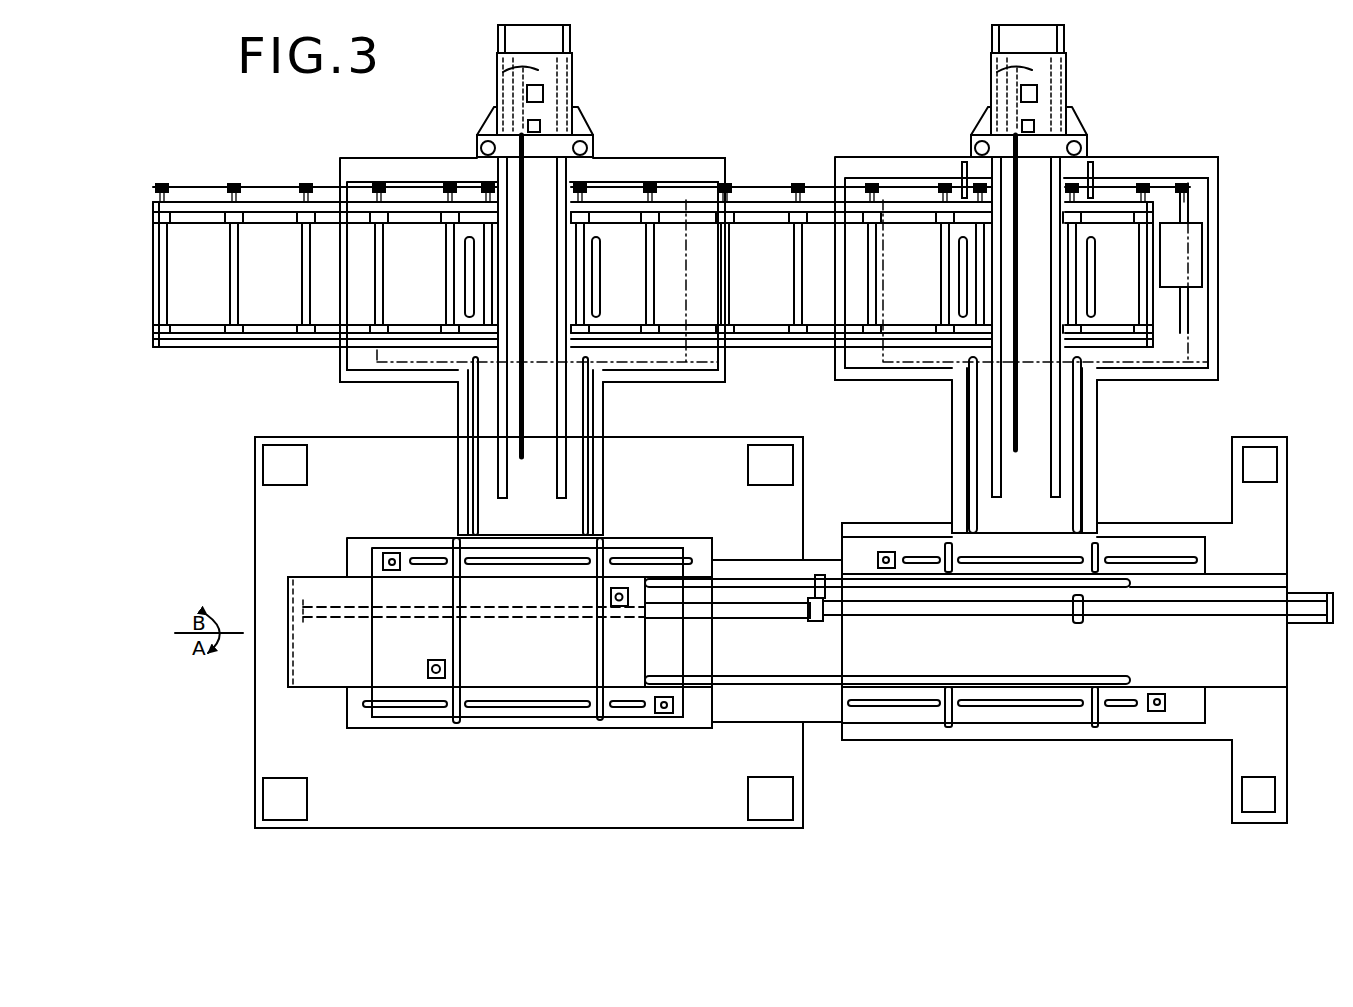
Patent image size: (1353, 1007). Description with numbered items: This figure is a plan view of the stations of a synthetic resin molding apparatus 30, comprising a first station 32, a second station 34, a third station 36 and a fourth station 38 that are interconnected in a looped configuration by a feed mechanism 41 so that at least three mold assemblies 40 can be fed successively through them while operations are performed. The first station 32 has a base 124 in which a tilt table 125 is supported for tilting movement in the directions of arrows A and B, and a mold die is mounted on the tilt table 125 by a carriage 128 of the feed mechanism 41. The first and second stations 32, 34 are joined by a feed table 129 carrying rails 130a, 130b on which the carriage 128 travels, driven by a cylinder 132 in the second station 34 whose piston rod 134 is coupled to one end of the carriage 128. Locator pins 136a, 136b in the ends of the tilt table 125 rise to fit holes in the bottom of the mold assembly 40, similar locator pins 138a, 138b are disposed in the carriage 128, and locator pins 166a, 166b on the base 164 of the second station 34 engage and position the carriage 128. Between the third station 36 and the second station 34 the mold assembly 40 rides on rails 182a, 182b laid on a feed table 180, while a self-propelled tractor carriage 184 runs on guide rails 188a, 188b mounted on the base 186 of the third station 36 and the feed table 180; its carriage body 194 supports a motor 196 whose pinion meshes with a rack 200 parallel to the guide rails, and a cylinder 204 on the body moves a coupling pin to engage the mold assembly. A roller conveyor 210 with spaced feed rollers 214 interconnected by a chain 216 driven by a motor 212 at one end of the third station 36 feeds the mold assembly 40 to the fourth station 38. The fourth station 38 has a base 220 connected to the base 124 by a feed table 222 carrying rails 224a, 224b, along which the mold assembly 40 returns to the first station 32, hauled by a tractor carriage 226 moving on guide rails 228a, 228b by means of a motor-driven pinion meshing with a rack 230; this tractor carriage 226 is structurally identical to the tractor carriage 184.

The synthetic resin molding apparatus 30 is at (855, 70).
The first station 32 is at (240, 720).
The second station 34 is at (1160, 510).
The third station 36 is at (1057, 239).
The fourth station 38 is at (541, 240).
The mold assembly 40 is at (686, 283).
The feed mechanism 41 is at (820, 577).
The base 124 is at (430, 817).
The tilt table 125 is at (529, 635).
The carriage 128 is at (466, 657).
The feed table 129 is at (820, 722).
The rail 130a is at (760, 577).
The rail 130b is at (760, 678).
The cylinder 132 is at (975, 614).
The piston rod 134 is at (542, 620).
The locator pin 136a is at (393, 551).
The locator pin 136b is at (664, 714).
The locator pin 138a is at (432, 664).
The locator pin 138b is at (617, 610).
The base 164 is at (1064, 638).
The locator pin 166a is at (888, 551).
The locator pin 166b is at (1157, 712).
The feed table 180 is at (1029, 445).
The rail 182a is at (968, 433).
The rail 182b is at (1083, 446).
The tractor carriage 184 is at (1034, 273).
The base 186 is at (1213, 183).
The guide rail 188a is at (1060, 400).
The guide rail 188b is at (995, 398).
The carriage body 194 is at (1029, 68).
The motor 196 is at (1039, 94).
The rack 200 is at (1015, 452).
The cylinder 204 is at (1001, 124).
The roller conveyor 210 is at (779, 172).
The motor 212 is at (1198, 262).
The feed roller 214 is at (303, 218).
The chain 216 is at (752, 186).
The base 220 is at (653, 158).
The feed table 222 is at (529, 446).
The rail 224a is at (478, 472).
The rail 224b is at (583, 485).
The tractor carriage 226 is at (531, 261).
The guide rail 228a is at (502, 428).
The guide rail 228b is at (562, 408).
The rack 230 is at (522, 457).